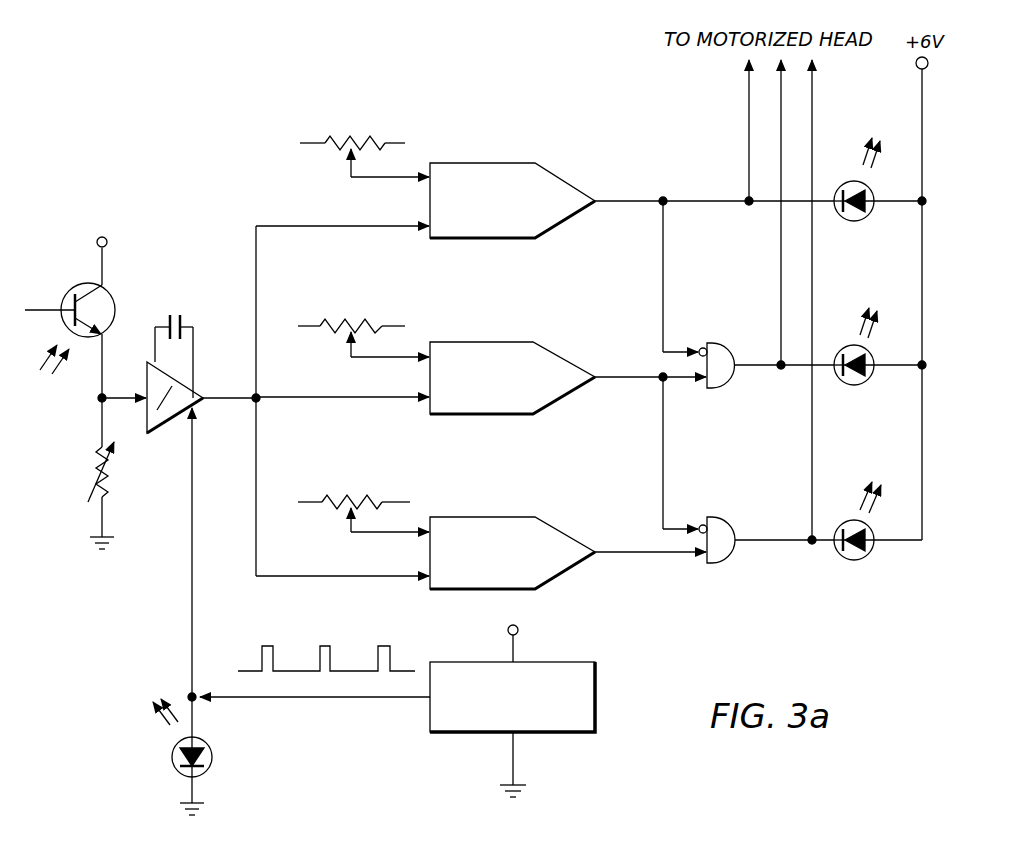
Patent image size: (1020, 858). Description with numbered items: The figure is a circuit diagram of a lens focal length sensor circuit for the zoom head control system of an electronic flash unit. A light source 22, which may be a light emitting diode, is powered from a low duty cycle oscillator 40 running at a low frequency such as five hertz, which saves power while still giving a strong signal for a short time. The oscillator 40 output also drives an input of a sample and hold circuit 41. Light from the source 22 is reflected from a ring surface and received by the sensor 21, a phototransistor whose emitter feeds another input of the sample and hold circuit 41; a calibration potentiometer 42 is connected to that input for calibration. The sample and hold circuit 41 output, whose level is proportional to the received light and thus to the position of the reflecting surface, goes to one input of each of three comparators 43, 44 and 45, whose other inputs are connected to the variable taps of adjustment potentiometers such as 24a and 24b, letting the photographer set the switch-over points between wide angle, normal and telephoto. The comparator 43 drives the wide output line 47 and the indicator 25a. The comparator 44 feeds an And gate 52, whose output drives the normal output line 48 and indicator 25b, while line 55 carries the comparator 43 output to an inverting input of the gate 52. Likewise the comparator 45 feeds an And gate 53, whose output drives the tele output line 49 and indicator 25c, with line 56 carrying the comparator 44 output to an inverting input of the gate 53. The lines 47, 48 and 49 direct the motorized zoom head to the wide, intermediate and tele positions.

The receiver or sensor 21 is at (117, 297).
The light source 22 is at (210, 752).
The adjustment potentiometer 24a is at (350, 177).
The adjustment potentiometer 24b is at (350, 357).
The indicator 25a is at (866, 219).
The indicator 25b is at (863, 383).
The indicator 25c is at (865, 558).
The low duty cycle oscillator 40 is at (429, 733).
The sample and hold circuit 41 is at (165, 427).
The calibration potentiometer 42 is at (108, 478).
The comparator 43 is at (553, 176).
The comparator 44 is at (557, 355).
The comparator 45 is at (553, 530).
The output line 47 is at (643, 200).
The normal output line 48 is at (781, 88).
The tele output line 49 is at (812, 108).
The And gate 52 is at (720, 342).
The And gate 53 is at (725, 515).
The line 55 is at (663, 272).
The line 56 is at (663, 455).